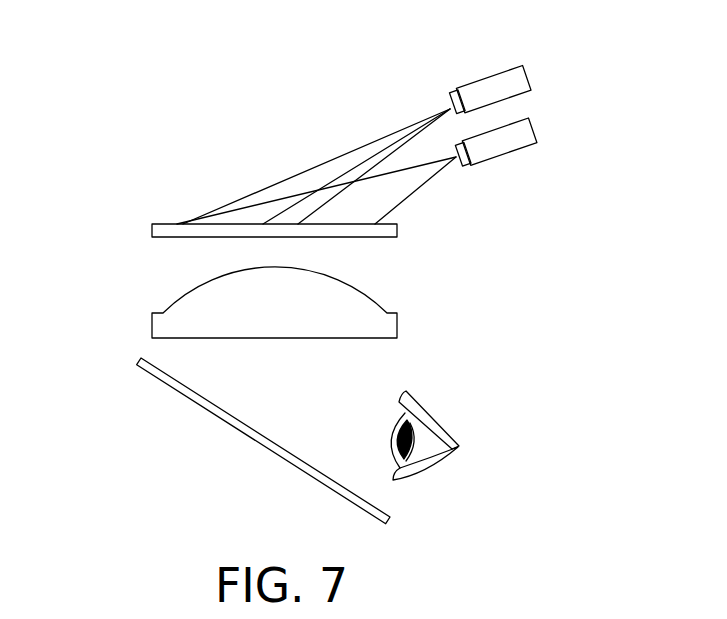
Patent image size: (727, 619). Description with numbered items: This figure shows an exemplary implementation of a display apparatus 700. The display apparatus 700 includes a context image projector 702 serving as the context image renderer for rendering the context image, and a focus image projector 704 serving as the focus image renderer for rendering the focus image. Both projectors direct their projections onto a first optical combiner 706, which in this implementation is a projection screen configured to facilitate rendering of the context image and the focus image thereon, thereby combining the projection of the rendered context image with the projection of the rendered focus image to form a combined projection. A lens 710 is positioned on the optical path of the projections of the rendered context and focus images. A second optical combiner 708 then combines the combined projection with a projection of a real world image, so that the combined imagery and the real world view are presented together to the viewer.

The display apparatus 700 is at (548, 40).
The context image projector 702 is at (537, 127).
The focus image projector 704 is at (530, 78).
The first optical combiner 706 is at (398, 227).
The second optical combiner 708 is at (138, 360).
The lens 710 is at (399, 320).